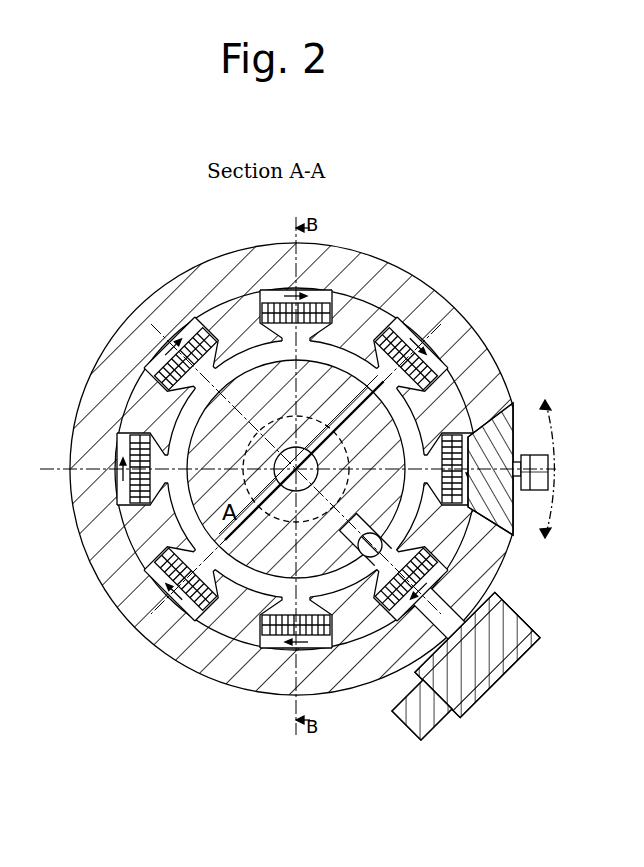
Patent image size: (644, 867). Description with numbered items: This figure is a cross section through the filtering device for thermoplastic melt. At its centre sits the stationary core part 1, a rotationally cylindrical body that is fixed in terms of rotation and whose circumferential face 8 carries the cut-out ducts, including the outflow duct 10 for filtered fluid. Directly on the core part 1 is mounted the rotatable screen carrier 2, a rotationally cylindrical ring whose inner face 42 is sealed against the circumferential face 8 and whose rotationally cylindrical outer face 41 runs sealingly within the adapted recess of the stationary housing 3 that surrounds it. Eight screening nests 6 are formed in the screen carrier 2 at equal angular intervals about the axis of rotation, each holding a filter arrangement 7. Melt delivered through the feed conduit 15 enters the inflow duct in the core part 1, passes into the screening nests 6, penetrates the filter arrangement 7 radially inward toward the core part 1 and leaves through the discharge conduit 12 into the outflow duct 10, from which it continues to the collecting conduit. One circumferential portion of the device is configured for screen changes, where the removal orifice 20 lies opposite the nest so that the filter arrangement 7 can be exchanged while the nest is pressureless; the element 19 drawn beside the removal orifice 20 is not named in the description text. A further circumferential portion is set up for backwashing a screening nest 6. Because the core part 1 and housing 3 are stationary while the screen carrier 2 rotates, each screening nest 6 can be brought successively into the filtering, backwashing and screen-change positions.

The core part 1 is at (210, 290).
The screen carrier 2 is at (447, 400).
The housing 3 is at (355, 277).
The screening nests 6 is at (440, 326).
The filter arrangement 7 is at (165, 335).
The circumferential face of the core part 8 is at (326, 449).
The outflow duct 10 is at (190, 668).
The discharge conduit 12 is at (347, 630).
The feed conduit 15 is at (244, 387).
The adjusting wedge 19 is at (515, 527).
The removal orifice 20 is at (530, 416).
The outer face of the screen carrier 41 is at (552, 536).
The inner face of the screen carrier 42 is at (555, 648).